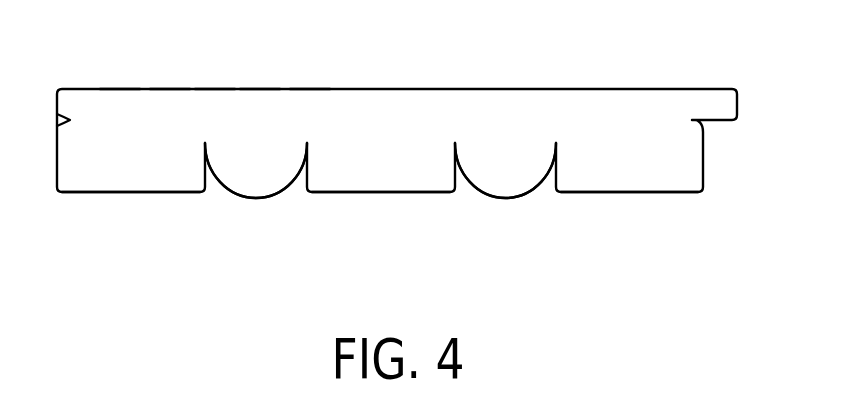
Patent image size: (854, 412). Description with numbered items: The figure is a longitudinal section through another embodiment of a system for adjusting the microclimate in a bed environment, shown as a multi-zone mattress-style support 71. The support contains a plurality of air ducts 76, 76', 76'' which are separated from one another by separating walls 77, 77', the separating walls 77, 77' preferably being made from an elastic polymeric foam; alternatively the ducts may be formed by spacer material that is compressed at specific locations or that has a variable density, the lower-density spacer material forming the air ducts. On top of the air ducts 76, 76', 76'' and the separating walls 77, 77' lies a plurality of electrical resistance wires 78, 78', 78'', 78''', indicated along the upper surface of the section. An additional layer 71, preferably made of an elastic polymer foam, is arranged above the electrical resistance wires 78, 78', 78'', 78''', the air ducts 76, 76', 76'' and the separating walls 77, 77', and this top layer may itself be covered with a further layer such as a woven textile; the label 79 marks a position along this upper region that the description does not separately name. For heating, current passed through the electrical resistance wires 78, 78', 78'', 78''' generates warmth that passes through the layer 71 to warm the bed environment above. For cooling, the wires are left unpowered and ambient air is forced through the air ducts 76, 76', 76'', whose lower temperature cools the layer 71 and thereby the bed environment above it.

The multi-zone mattress-style support 71 is at (622, 89).
The upper surface portion 79 is at (120, 89).
The electrical resistance wire 78 is at (170, 54).
The electrical resistance wire 78' is at (212, 54).
The electrical resistance wire 78'' is at (258, 54).
The electrical resistance wire 78''' is at (306, 54).
The air duct 76 is at (131, 230).
The air duct 76' is at (381, 230).
The air duct 76'' is at (629, 230).
The separating wall 77 is at (256, 205).
The separating wall 77' is at (505, 205).